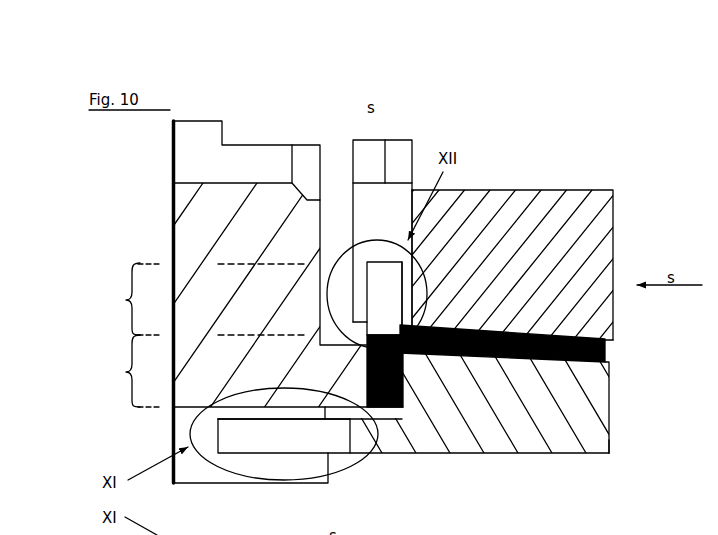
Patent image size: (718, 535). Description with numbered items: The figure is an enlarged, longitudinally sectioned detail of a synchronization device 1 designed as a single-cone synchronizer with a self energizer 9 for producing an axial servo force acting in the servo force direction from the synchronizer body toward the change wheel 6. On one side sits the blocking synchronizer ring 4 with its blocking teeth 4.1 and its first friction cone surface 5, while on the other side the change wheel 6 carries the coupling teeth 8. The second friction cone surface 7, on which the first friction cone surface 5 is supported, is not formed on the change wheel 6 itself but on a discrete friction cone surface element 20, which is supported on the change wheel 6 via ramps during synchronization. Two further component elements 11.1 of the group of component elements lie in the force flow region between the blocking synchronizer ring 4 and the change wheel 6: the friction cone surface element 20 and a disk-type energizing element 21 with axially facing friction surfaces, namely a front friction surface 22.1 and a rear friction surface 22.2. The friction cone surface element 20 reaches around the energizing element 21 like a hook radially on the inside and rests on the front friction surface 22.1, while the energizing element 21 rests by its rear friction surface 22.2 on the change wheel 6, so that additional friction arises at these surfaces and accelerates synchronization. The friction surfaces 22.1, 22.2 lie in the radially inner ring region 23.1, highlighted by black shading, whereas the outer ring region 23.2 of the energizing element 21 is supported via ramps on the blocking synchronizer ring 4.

The synchronization device 1 is at (598, 125).
The blocking synchronizer ring 4 is at (614, 188).
The blocking teeth 4.1 is at (403, 146).
The first friction cone surface 5 is at (603, 342).
The change wheel 6 is at (172, 203).
The second friction cone surface 7 is at (606, 357).
The coupling teeth 8 is at (195, 128).
The self energizer 9 is at (403, 284).
The component element 11.1 is at (413, 258).
The friction cone surface element 20 is at (587, 455).
The energizing element 21 is at (405, 368).
The front friction surface 22.1 is at (452, 385).
The rear friction surface 22.2 is at (357, 367).
The radially inner ring region 23.1 is at (121, 371).
The outer ring region 23.2 is at (121, 299).